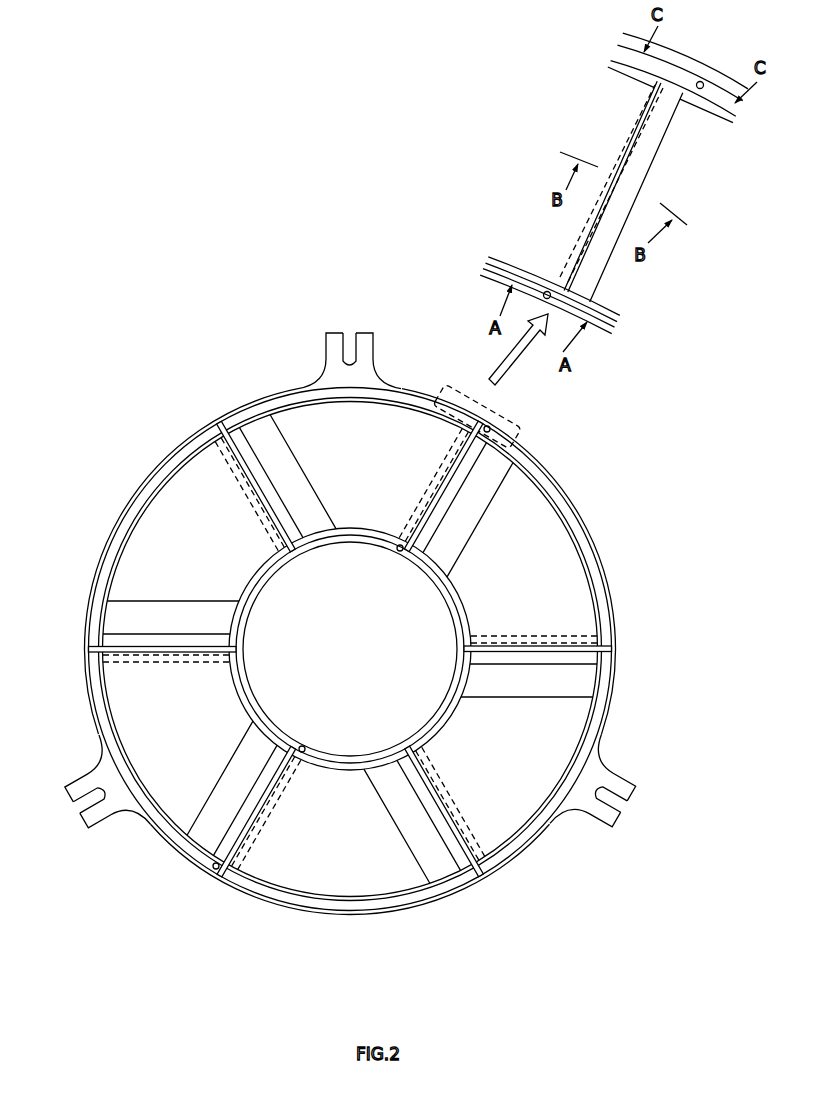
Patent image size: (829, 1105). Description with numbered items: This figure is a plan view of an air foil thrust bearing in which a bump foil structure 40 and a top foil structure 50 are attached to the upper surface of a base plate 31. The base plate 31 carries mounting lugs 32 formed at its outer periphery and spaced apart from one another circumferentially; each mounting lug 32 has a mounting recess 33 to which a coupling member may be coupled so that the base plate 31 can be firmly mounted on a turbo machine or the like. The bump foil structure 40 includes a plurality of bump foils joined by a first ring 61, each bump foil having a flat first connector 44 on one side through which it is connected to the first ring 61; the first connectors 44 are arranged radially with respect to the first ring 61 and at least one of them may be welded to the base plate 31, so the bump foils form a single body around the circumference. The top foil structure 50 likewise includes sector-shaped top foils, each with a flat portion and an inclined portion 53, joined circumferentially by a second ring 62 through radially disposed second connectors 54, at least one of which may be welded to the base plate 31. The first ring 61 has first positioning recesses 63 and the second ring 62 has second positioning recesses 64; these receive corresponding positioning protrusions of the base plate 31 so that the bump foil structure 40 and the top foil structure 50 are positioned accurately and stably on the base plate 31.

The base plate 31 is at (596, 540).
The mounting lug 32 is at (376, 340).
The mounting recess 33 is at (350, 358).
The bump foil structure 40 is at (252, 656).
The first connector 44 is at (288, 570).
The top foil structure 50 is at (100, 522).
The inclined portion 53 is at (262, 432).
The second connector 54 is at (300, 548).
The first ring 61 is at (257, 598).
The second ring 62 is at (104, 577).
The first positioning recess 63 is at (548, 290).
The second positioning recess 64 is at (702, 80).